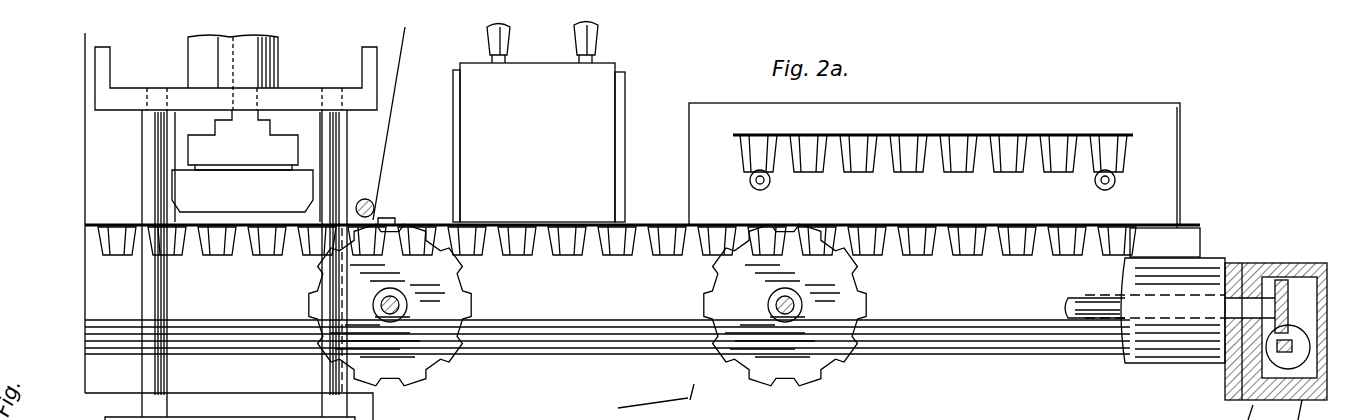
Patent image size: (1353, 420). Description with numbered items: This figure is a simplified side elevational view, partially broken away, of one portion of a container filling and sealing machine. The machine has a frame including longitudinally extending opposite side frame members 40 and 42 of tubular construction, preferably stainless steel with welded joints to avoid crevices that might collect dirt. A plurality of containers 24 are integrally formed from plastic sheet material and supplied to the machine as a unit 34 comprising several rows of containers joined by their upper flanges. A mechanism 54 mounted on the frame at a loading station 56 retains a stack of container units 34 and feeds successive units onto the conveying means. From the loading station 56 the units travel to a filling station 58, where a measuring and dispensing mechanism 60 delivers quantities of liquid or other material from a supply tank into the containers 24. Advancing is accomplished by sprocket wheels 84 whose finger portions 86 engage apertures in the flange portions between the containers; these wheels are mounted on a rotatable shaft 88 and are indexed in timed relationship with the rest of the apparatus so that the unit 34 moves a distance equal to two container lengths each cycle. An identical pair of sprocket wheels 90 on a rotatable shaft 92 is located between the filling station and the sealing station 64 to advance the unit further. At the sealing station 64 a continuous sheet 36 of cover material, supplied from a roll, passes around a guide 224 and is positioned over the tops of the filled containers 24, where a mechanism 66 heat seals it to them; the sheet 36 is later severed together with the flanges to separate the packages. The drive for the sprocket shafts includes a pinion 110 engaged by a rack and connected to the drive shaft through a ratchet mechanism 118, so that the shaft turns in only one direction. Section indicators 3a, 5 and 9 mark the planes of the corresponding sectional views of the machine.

The section line 3a is at (70, 220).
The section line 5 is at (627, 38).
The section line 9 is at (290, 31).
The containers 24 is at (220, 265).
The container unit 34 is at (648, 223).
The continuous sheet 36 is at (398, 93).
The side frame member 40 is at (1160, 350).
The side frame member 42 is at (1057, 340).
The mechanism 54 is at (1190, 158).
The loading station 56 is at (953, 285).
The filling station 58 is at (500, 272).
The measuring and dispensing mechanism 60 is at (632, 100).
The sealing station 64 is at (242, 287).
The sealing mechanism 66 is at (185, 152).
The sprocket wheels 84 is at (840, 330).
The finger portions 86 is at (830, 380).
The rotatable shaft 88 is at (768, 303).
The sprocket wheels 90 is at (432, 340).
The rotatable shaft 92 is at (374, 300).
The pinion 110 is at (1283, 303).
The ratchet mechanism 118 is at (1303, 267).
The guide 224 is at (372, 200).